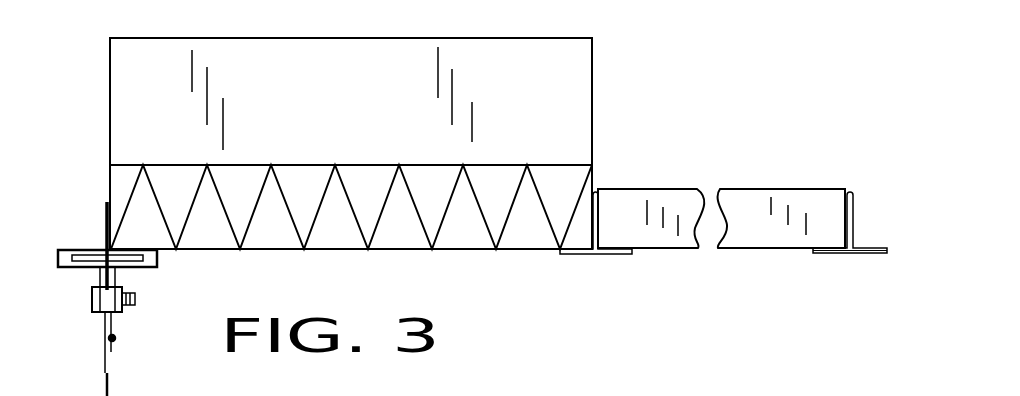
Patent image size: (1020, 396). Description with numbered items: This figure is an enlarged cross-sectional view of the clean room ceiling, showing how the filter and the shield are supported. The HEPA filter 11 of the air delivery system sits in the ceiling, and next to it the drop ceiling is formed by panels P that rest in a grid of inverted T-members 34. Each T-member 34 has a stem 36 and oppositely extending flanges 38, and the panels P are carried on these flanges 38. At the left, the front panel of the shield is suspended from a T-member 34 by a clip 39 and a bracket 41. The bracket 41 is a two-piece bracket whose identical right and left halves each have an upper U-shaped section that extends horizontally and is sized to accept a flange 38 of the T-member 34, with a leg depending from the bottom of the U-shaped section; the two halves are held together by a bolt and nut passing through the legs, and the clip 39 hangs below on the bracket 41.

The HEPA filter 11 is at (110, 183).
The panel P is at (622, 189).
The inverted T-member 34 is at (870, 195).
The stem 36 is at (853, 223).
The flange 38 is at (873, 247).
The clip 39 is at (93, 339).
The bracket 41 is at (86, 279).